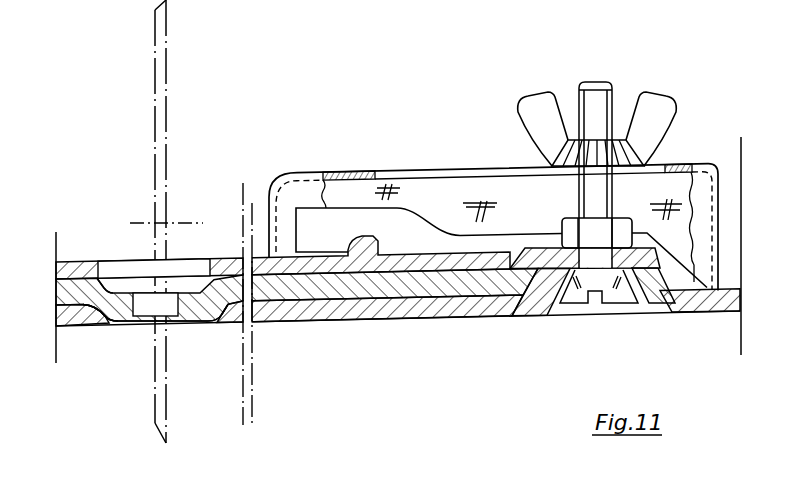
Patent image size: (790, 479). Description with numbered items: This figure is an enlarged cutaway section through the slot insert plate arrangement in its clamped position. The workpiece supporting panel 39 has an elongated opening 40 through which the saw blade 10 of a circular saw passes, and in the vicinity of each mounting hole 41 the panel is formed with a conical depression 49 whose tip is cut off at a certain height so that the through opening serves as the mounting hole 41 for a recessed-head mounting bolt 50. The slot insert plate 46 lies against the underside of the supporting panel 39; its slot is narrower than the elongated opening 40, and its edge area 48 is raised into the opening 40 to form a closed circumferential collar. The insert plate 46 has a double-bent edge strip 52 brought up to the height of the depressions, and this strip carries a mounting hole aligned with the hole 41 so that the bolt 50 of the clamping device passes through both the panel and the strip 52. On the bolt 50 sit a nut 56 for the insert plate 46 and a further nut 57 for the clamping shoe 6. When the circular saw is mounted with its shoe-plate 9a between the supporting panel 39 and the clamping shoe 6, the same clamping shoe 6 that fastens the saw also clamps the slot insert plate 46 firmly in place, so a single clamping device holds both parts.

The clamping shoe 6 is at (694, 163).
The shoe-plate 9a is at (72, 273).
The saw blade 10 is at (165, 128).
The workpiece supporting panel 39 is at (425, 310).
The elongated opening 40 is at (220, 323).
The mounting hole 41 is at (579, 310).
The slot insert plate 46 is at (366, 297).
The edge area 48 is at (118, 308).
The conical depression 49 is at (630, 306).
The recessed-head mounting bolt 50 is at (614, 207).
The edge strip 52 is at (542, 258).
The nut 56 is at (572, 235).
The nut 57 is at (590, 148).